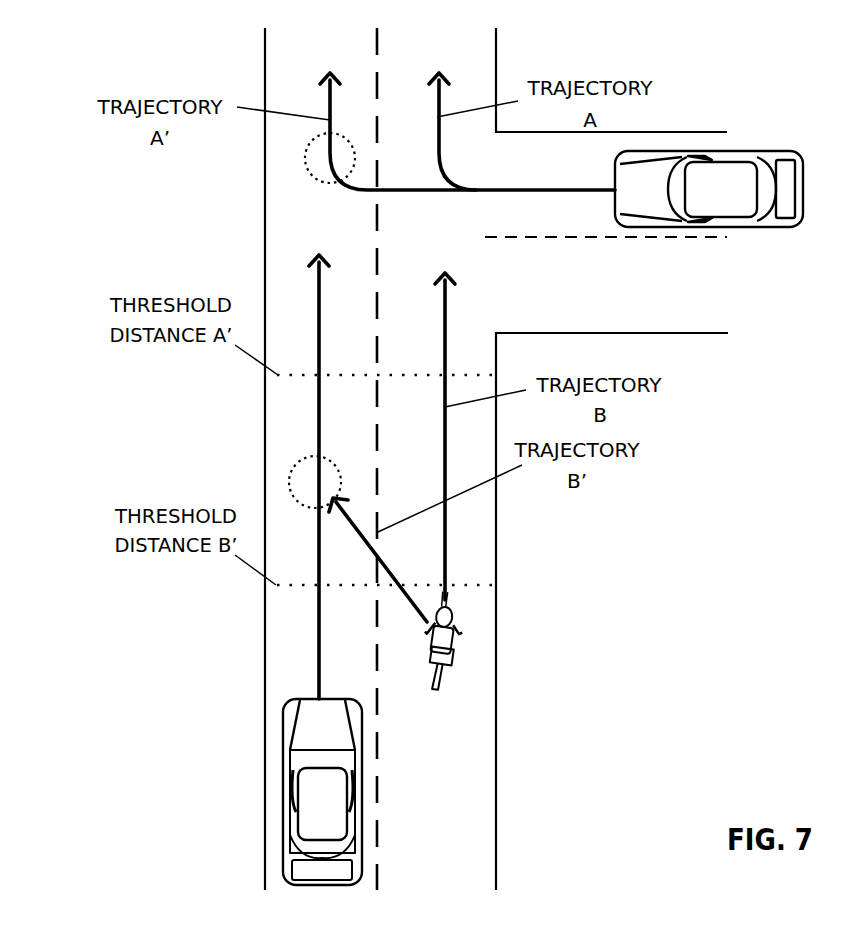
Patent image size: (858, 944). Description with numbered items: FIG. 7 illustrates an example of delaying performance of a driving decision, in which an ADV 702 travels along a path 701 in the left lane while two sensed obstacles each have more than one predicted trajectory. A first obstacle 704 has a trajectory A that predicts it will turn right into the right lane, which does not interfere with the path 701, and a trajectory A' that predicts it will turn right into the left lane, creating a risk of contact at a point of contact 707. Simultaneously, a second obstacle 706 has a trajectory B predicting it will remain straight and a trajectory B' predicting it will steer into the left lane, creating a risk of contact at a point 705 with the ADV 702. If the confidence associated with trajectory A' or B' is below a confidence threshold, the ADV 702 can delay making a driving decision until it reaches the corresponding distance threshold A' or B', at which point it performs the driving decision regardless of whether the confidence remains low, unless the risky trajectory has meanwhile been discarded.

The path 701 is at (318, 607).
The ADV 702 is at (285, 763).
The first obstacle 704 is at (683, 153).
The point 705 is at (305, 482).
The second obstacle 706 is at (455, 638).
The point of contact 707 is at (305, 165).